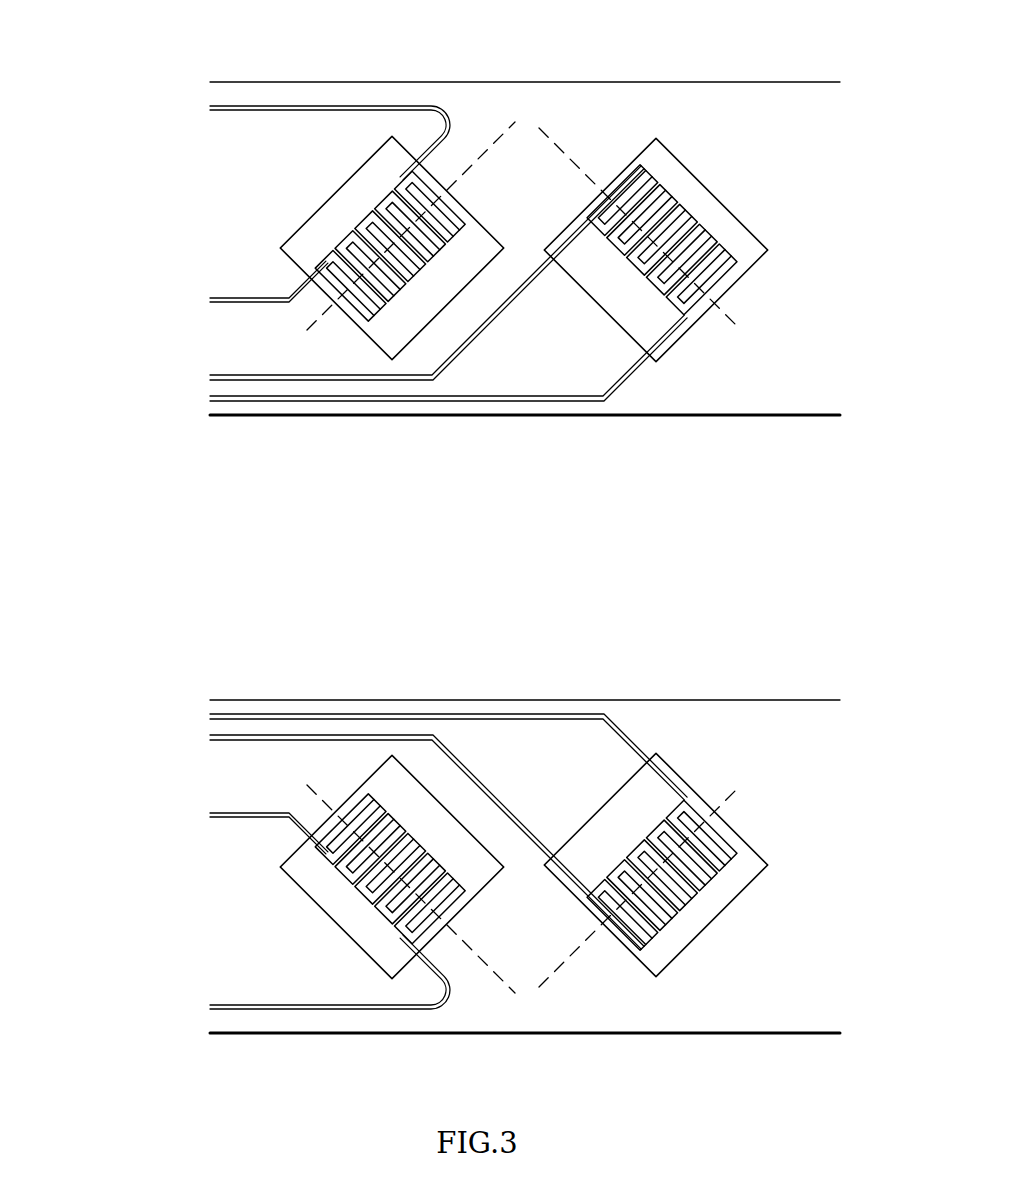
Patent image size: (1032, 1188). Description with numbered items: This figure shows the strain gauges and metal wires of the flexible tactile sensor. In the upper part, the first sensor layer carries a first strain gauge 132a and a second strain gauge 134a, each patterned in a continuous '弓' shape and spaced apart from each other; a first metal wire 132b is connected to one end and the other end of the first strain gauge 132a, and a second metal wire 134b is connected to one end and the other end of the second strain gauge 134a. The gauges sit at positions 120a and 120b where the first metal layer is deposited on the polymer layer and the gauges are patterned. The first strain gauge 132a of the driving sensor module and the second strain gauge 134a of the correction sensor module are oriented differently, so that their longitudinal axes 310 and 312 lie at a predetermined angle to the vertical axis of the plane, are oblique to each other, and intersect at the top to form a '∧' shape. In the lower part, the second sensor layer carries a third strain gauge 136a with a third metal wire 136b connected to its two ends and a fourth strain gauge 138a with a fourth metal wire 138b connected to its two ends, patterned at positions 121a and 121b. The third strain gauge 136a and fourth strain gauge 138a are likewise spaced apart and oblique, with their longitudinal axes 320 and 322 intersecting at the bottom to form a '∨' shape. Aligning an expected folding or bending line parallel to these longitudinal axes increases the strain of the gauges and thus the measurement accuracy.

The longitudinal axis 310 is at (500, 140).
The longitudinal axis 312 is at (557, 140).
The longitudinal axis 320 is at (500, 975).
The longitudinal axis 322 is at (557, 975).
The position where strain gauge is patterned 120a is at (483, 227).
The position where strain gauge is patterned 120b is at (768, 245).
The position where strain gauge is patterned 121a is at (483, 888).
The position where strain gauge is patterned 121b is at (768, 870).
The first strain gauge 132a is at (373, 212).
The first metal wire 132b is at (247, 291).
The second strain gauge 134a is at (657, 200).
The second metal wire 134b is at (611, 407).
The third strain gauge 136a is at (373, 903).
The third metal wire 136b is at (247, 996).
The fourth strain gauge 138a is at (657, 915).
The fourth metal wire 138b is at (611, 708).